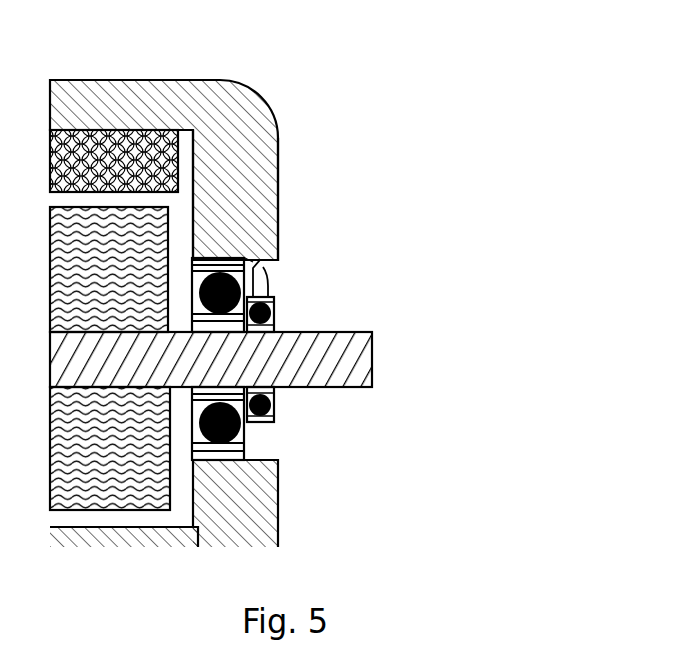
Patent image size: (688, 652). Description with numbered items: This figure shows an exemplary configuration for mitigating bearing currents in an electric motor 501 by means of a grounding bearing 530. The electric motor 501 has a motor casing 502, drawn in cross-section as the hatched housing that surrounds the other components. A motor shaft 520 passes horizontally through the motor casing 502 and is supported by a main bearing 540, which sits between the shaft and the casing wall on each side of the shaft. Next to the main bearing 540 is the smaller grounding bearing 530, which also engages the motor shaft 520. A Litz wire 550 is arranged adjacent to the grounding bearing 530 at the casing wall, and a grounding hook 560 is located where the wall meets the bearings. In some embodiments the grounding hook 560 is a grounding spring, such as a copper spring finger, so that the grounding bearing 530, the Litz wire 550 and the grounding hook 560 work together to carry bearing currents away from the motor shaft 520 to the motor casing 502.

The electric motor 501 is at (193, 72).
The motor casing 502 is at (288, 198).
The motor shaft 520 is at (384, 364).
The grounding bearing 530 is at (288, 407).
The main bearing 540 is at (263, 450).
The Litz wire 550 is at (283, 278).
The grounding hook 560 is at (248, 248).